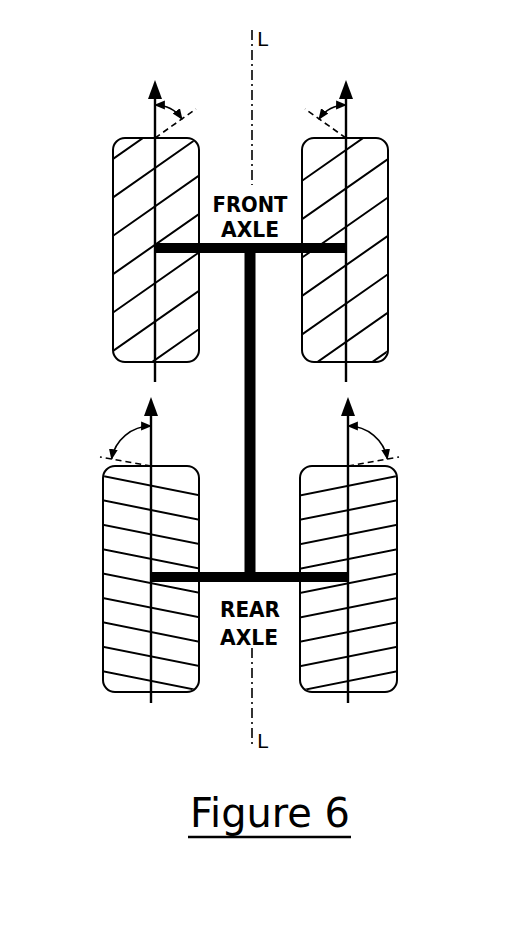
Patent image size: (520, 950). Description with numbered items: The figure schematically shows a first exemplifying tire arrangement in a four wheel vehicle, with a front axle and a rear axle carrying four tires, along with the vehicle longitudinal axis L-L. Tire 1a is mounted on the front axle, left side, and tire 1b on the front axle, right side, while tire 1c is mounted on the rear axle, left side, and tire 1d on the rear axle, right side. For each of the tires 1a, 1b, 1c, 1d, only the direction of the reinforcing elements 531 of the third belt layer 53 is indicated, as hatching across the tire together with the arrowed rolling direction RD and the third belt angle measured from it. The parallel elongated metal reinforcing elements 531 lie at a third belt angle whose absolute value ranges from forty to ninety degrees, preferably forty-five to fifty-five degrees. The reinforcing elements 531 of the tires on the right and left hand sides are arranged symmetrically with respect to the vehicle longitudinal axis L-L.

The tire 1a is at (88, 136).
The tire 1b is at (408, 144).
The tire 1c is at (67, 448).
The tire 1d is at (424, 478).
The third belt layer 53 is at (127, 288).
The reinforcing elements 531 is at (124, 196).